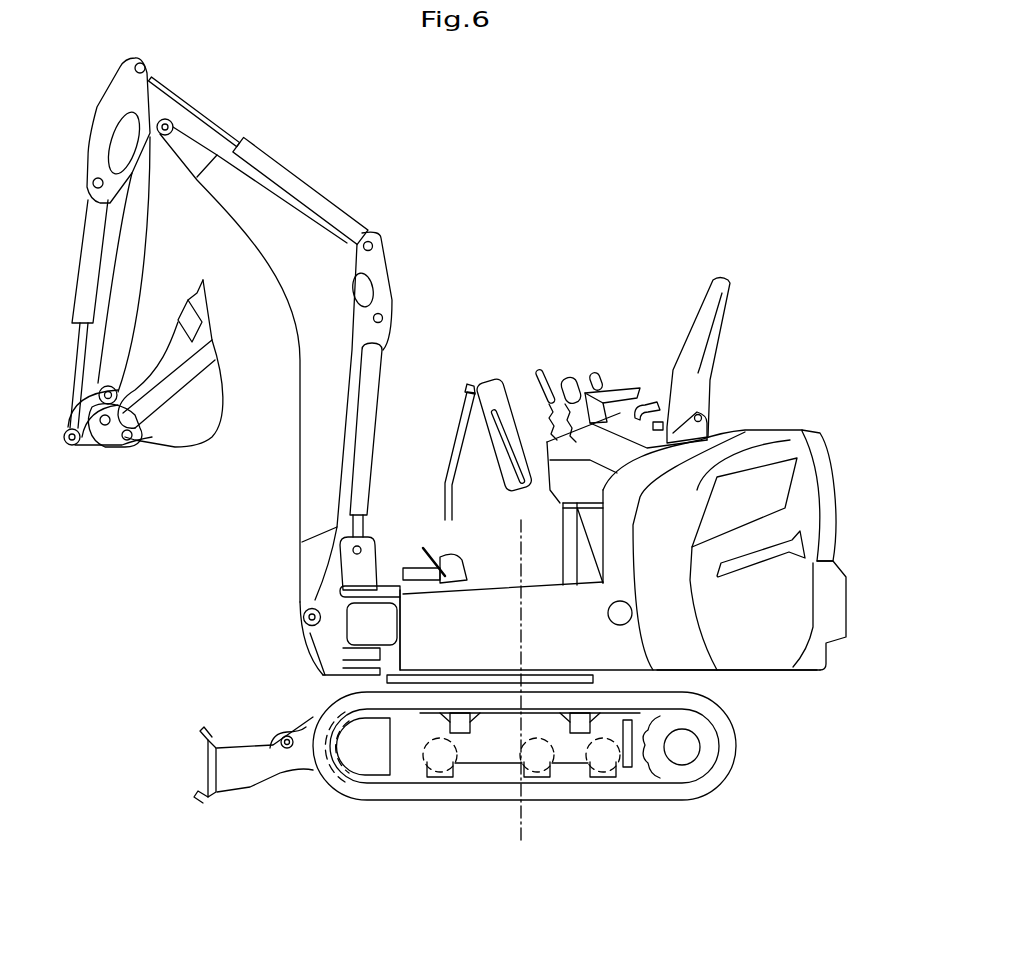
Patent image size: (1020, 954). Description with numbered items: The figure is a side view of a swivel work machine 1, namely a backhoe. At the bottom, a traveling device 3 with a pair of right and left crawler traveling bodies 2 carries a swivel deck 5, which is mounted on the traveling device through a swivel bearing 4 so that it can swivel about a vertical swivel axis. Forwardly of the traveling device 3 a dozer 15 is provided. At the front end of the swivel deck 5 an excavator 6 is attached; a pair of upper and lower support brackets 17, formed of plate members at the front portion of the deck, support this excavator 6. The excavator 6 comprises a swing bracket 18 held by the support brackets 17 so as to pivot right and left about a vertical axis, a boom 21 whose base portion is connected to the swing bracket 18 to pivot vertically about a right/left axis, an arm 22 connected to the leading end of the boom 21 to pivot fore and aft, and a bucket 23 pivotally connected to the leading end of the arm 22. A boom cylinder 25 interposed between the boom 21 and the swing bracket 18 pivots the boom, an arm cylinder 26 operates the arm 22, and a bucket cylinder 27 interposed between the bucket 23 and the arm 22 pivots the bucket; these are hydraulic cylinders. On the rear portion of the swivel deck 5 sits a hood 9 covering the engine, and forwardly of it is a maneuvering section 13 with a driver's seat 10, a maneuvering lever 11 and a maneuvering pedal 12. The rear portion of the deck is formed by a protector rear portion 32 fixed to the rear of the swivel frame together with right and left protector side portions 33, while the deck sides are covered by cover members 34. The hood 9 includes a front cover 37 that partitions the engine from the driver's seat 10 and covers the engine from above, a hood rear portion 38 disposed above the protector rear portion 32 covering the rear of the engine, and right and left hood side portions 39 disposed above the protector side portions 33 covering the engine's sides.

The swivel work machine 1 is at (649, 177).
The crawler traveling bodies 2 is at (480, 795).
The traveling device 3 is at (553, 806).
The swivel bearing 4 is at (467, 673).
The swivel deck 5 is at (639, 680).
The excavator 6 is at (392, 250).
The hood 9 is at (833, 430).
The driver's seat 10 is at (718, 347).
The maneuvering lever 11 is at (446, 457).
The maneuvering pedal 12 is at (440, 546).
The maneuvering section 13 is at (502, 378).
The dozer 15 is at (243, 785).
The support brackets 17 is at (357, 655).
The swing bracket 18 is at (327, 590).
The boom 21 is at (305, 400).
The arm 22 is at (146, 270).
The bucket 23 is at (184, 441).
The boom cylinder 25 is at (378, 388).
The arm cylinder 26 is at (298, 190).
The bucket cylinder 27 is at (88, 268).
The protector rear portion 32 is at (840, 620).
The protector side portions 33 is at (777, 657).
The cover members 34 is at (604, 657).
The front cover 37 is at (707, 447).
The hood rear portion 38 is at (830, 489).
The hood side portions 39 is at (776, 431).